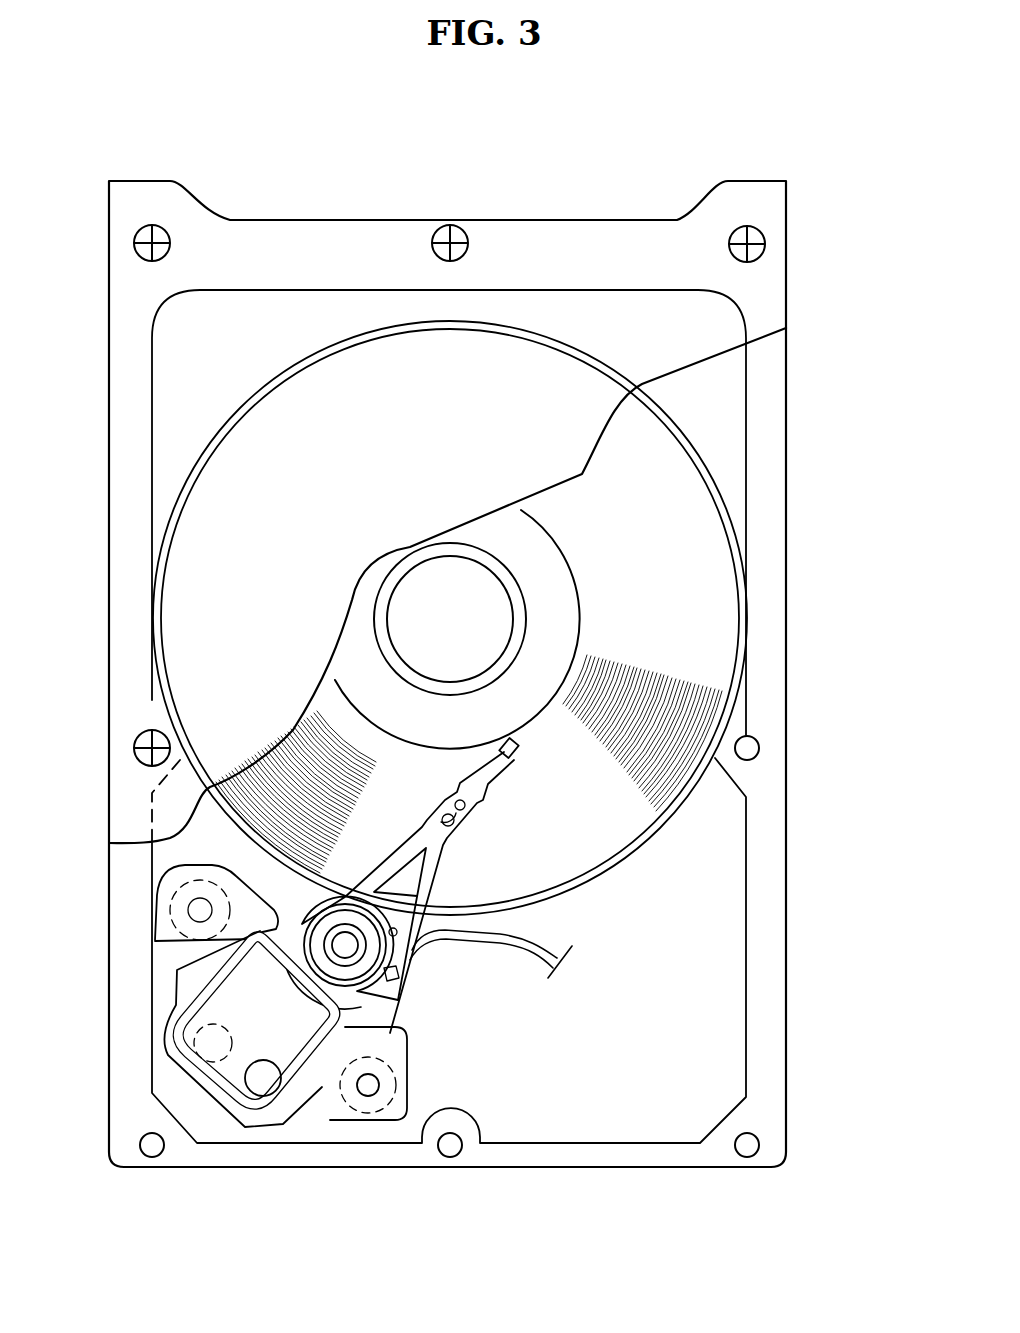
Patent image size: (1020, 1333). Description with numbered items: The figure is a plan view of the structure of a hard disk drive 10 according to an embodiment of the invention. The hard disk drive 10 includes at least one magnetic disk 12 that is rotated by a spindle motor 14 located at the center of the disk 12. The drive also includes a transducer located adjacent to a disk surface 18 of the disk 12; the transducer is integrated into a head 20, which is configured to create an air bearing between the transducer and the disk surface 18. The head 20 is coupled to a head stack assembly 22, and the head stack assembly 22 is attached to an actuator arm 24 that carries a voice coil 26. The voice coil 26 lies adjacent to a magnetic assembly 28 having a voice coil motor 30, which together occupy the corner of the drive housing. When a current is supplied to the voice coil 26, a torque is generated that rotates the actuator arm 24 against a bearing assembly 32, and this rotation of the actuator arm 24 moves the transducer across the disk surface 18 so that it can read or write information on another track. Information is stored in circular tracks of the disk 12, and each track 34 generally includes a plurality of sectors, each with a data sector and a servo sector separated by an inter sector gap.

The hard disk drive 10 is at (843, 206).
The magnetic disk 12 is at (697, 549).
The spindle motor 14 is at (427, 598).
The disk surface 18 is at (666, 622).
The head 20 is at (500, 768).
The head stack assembly 22 is at (452, 850).
The actuator arm 24 is at (255, 937).
The voice coil 26 is at (183, 1030).
The magnetic assembly 28 is at (200, 976).
The voice coil motor 30 is at (303, 1111).
The bearing assembly 32 is at (350, 952).
The track 34 is at (307, 738).